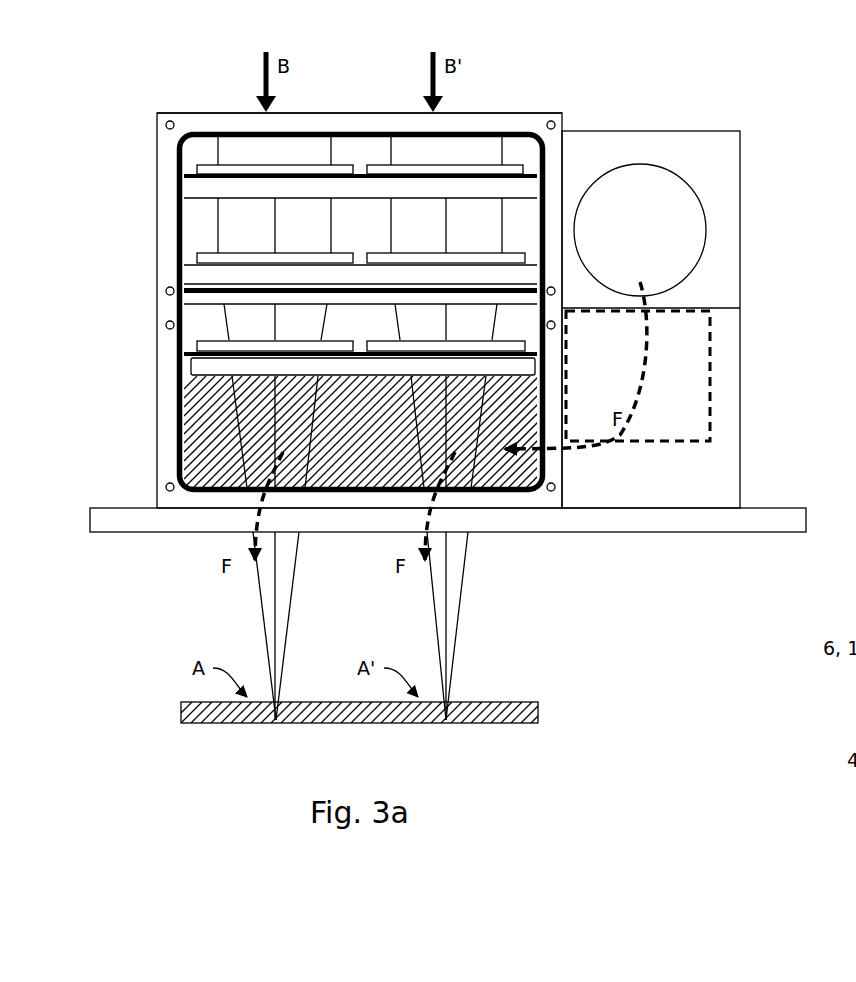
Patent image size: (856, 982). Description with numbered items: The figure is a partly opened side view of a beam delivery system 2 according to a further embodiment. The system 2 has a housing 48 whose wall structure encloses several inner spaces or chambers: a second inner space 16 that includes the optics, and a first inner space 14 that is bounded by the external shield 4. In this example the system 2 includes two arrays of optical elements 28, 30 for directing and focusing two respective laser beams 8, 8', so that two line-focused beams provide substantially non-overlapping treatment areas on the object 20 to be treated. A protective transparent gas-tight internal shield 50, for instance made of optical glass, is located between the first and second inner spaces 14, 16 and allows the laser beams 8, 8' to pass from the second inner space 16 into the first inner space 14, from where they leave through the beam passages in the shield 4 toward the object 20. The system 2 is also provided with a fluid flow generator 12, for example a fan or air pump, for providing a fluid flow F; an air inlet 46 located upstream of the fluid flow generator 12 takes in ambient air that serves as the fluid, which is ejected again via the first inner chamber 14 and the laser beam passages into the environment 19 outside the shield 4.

The system 2 is at (206, 68).
The shield 4 is at (440, 508).
The laser beam 8 is at (281, 548).
The laser beam 8' is at (426, 548).
The fluid flow generator 12 is at (710, 360).
The first inner space 14 is at (192, 439).
The second inner space 16 is at (204, 152).
The environment 19 is at (365, 577).
The object 20 is at (212, 718).
The optical element 28 is at (194, 263).
The optical element 30 is at (194, 175).
The air inlet 46 is at (665, 228).
The housing 48 is at (340, 118).
The internal shield 50 is at (189, 298).